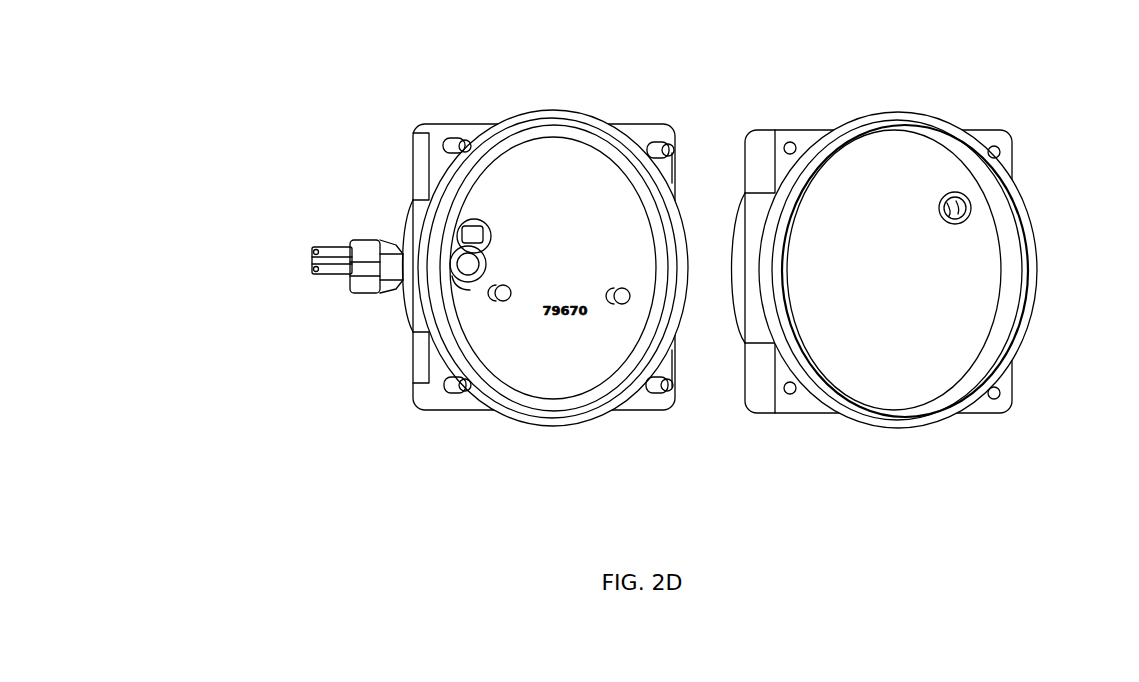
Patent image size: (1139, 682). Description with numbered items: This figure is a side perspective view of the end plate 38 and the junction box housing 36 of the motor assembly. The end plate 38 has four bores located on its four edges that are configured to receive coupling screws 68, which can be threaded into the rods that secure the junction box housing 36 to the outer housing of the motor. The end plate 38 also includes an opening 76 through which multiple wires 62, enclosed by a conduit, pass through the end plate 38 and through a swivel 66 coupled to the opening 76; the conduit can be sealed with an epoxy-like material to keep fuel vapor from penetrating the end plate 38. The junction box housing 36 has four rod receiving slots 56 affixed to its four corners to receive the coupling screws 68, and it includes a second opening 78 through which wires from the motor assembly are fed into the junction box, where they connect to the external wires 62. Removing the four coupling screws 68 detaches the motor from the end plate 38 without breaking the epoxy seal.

The junction box housing 36 is at (972, 334).
The end plate 38 is at (525, 370).
The rod receiving slots 56 is at (791, 144).
The wires 62 is at (312, 253).
The swivel 66 is at (380, 272).
The coupling screws 68 is at (448, 150).
The opening 76 is at (478, 268).
The second opening 78 is at (962, 210).